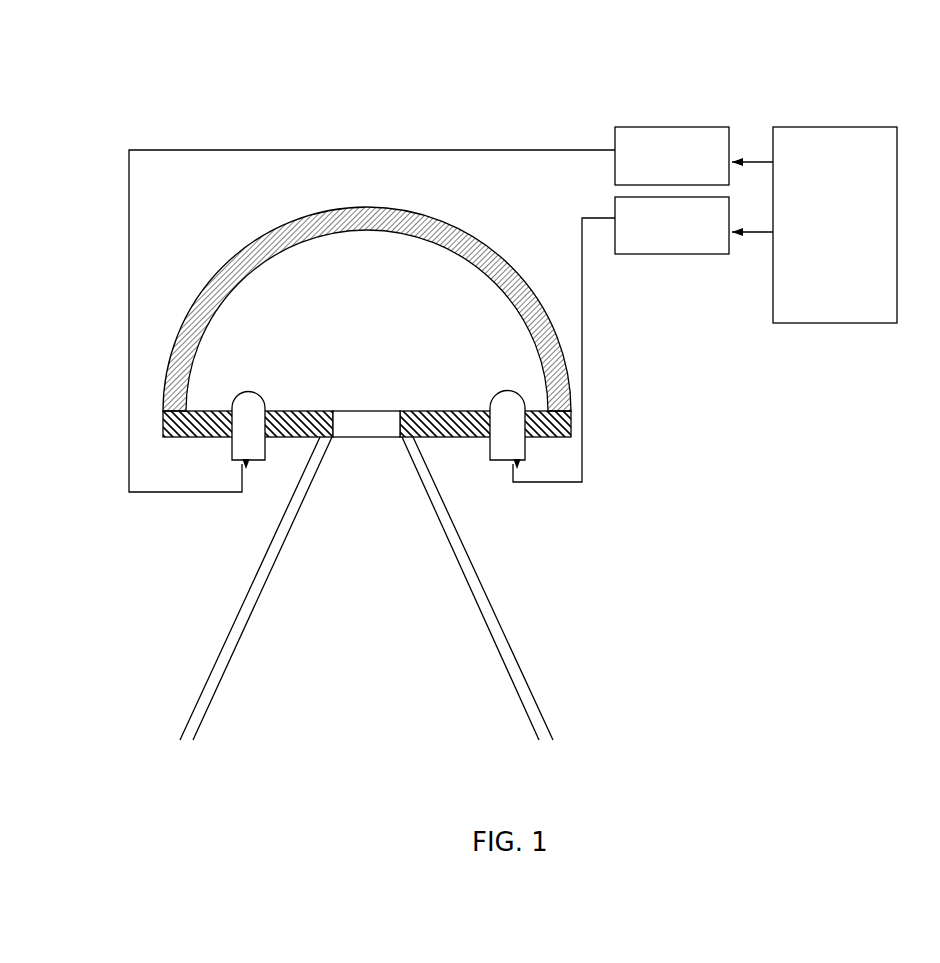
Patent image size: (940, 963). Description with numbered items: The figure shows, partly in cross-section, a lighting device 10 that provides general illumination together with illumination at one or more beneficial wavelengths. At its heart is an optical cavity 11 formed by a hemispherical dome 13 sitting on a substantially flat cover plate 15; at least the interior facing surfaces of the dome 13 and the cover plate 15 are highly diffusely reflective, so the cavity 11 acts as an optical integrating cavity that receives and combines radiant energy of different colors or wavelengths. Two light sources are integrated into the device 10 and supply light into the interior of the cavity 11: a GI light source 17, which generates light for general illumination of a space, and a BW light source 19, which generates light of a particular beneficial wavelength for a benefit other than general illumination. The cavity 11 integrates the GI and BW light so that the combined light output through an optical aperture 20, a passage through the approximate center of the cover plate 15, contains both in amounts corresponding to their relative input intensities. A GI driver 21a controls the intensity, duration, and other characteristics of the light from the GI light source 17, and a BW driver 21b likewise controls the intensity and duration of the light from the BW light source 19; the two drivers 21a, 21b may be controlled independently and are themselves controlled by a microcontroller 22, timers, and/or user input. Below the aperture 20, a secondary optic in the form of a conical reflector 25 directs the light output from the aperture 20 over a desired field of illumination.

The lighting device 10 is at (110, 102).
The optical cavity 11 is at (366, 323).
The hemispherical dome 13 is at (256, 240).
The cover plate 15 is at (446, 400).
The GI light source 17 is at (245, 390).
The BW light source 19 is at (503, 390).
The optical aperture 20 is at (365, 411).
The GI driver 21a is at (706, 128).
The BW driver 21b is at (729, 216).
The microcontroller 22 is at (806, 128).
The conical reflector 25 is at (513, 655).